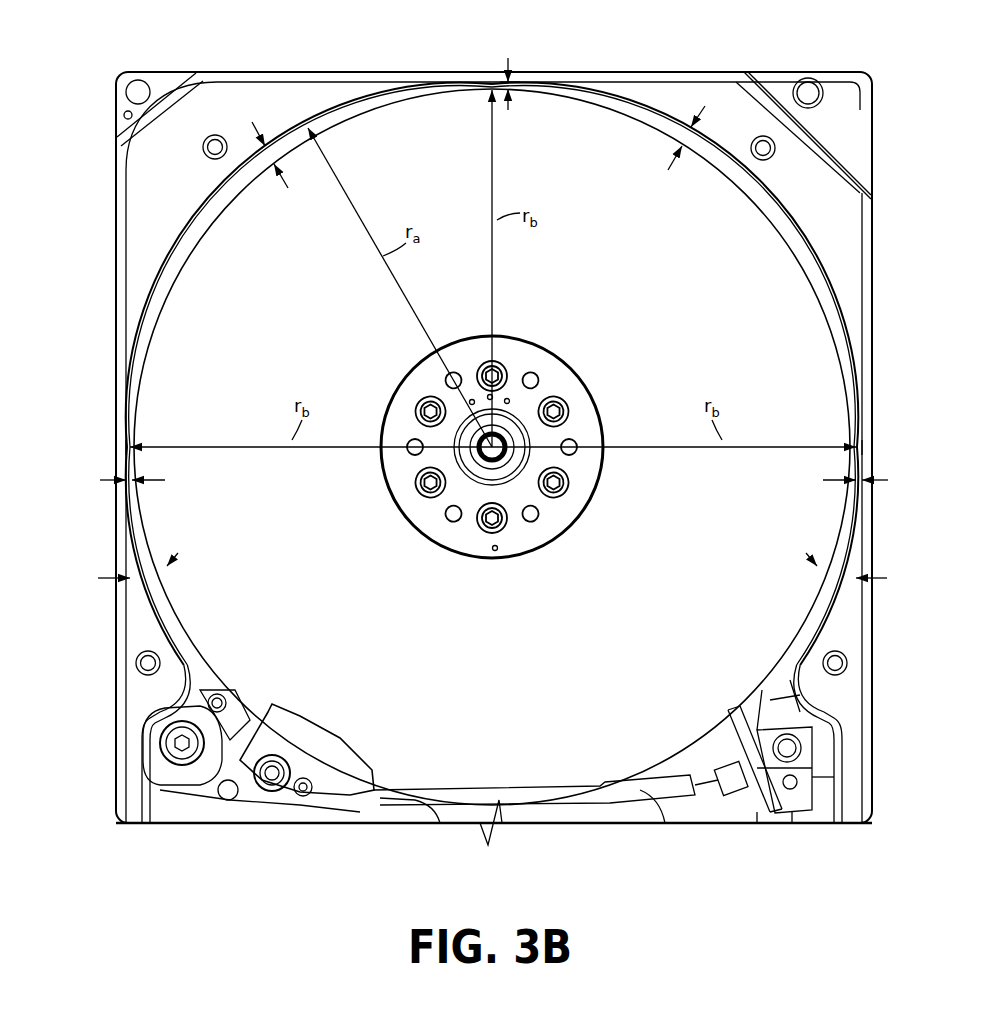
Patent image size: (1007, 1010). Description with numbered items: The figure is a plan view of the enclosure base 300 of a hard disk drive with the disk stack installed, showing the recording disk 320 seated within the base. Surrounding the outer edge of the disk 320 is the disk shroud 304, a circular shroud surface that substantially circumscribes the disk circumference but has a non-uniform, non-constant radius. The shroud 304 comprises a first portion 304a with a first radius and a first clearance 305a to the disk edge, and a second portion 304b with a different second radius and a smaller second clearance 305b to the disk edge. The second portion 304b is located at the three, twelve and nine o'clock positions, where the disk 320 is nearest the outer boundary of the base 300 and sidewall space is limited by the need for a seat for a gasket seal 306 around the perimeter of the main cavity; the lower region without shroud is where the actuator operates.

The enclosure base 300 is at (100, 40).
The disk shroud 304 is at (381, 85).
The first portion 304a is at (650, 105).
The second portion 304b is at (523, 92).
The first clearance 305a is at (255, 123).
The second clearance 305b is at (509, 60).
The gasket seal 306 is at (338, 99).
The recording disk 320 is at (498, 628).